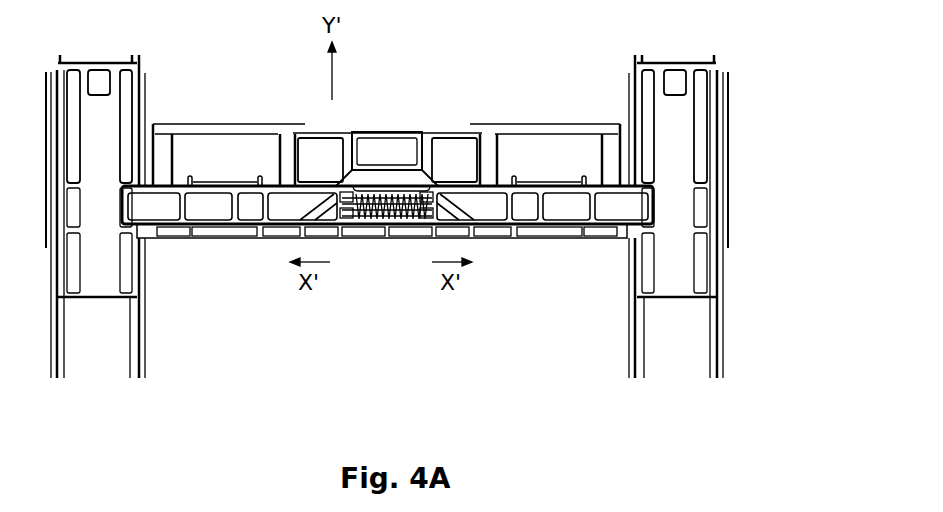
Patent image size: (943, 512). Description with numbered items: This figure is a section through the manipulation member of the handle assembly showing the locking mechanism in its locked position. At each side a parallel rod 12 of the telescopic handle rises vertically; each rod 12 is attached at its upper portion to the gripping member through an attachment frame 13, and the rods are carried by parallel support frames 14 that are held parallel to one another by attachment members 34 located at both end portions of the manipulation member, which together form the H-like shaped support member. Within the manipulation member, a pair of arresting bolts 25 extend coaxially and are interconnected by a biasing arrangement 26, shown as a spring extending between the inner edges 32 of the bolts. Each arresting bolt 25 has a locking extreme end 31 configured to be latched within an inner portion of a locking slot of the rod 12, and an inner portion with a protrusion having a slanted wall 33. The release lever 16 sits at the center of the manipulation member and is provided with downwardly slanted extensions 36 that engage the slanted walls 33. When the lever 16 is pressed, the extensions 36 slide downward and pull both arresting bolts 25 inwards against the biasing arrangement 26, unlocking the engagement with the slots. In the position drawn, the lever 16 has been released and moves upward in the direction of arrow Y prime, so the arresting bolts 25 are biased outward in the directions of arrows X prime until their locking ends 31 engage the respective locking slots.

The rod 12 is at (696, 334).
The attachment frame 13 is at (716, 64).
The parallel support frame 14 is at (724, 290).
The release lever 16 is at (397, 128).
The arresting bolt 25 is at (564, 227).
The biasing arrangement 26 is at (357, 229).
The locking extreme end 31 is at (605, 214).
The inner edge 32 is at (415, 229).
The protrusion with a slanted wall 33 is at (496, 214).
The attachment member 34 is at (724, 184).
The downwardly slanted extension 36 is at (407, 172).